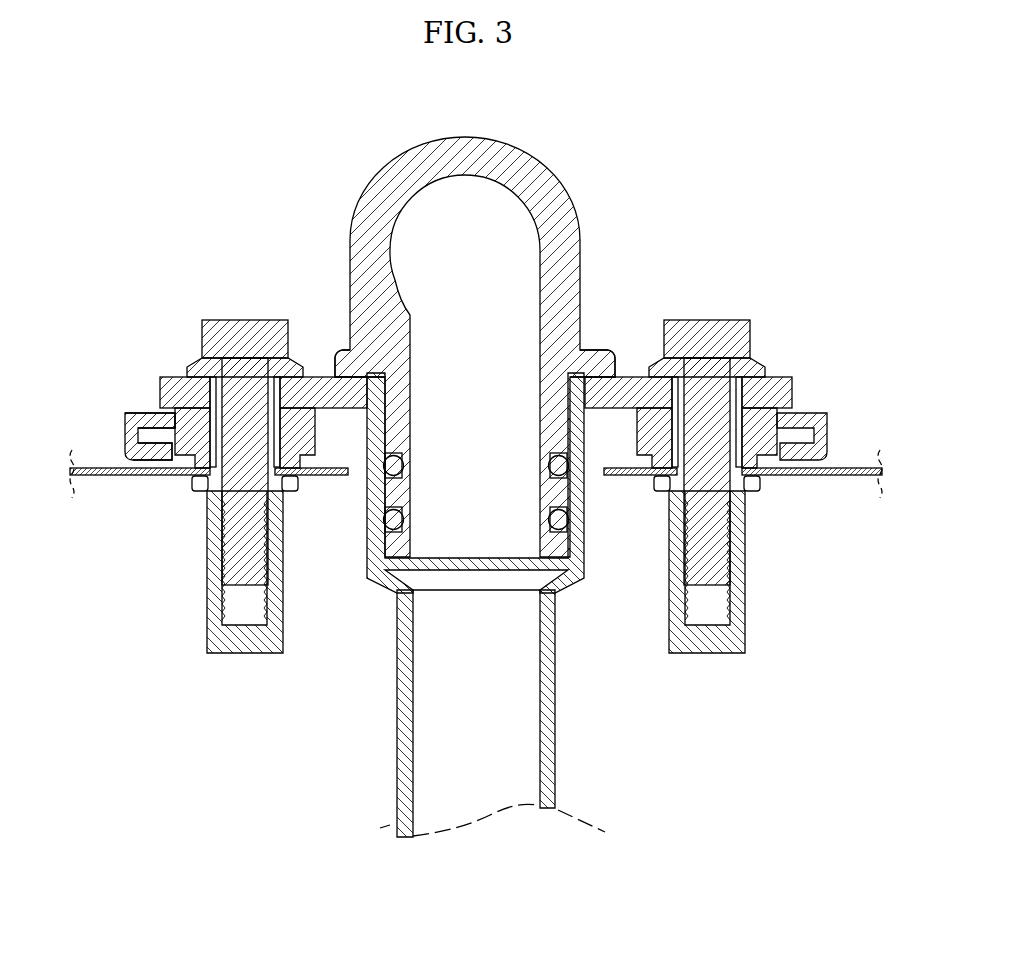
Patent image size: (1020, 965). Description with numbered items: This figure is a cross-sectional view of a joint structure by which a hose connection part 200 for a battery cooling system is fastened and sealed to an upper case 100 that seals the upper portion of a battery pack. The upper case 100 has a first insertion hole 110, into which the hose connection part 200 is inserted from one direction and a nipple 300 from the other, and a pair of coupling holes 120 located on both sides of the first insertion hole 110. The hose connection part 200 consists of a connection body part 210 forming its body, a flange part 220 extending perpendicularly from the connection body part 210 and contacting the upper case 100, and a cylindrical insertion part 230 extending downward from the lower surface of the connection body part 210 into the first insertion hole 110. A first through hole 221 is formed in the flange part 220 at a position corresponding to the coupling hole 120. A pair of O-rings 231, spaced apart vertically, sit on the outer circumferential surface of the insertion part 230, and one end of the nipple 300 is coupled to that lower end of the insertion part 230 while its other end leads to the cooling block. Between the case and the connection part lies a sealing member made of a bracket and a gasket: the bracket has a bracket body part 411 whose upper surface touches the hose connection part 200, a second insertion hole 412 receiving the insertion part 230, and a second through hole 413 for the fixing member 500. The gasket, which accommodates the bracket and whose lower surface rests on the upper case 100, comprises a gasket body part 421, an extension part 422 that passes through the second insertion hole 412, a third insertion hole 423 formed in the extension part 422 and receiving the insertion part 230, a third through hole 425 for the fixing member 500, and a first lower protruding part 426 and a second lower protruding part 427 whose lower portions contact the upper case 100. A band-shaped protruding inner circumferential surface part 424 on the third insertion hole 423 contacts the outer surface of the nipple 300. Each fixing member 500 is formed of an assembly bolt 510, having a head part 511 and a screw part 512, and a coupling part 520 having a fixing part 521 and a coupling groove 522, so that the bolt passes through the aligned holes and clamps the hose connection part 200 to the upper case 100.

The upper case 100 is at (485, 465).
The first insertion hole 110 is at (603, 476).
The coupling hole 120 is at (818, 413).
The hose connection part 200 is at (448, 334).
The connection body part 210 is at (562, 172).
The flange part 220 is at (167, 377).
The first through hole 221 is at (218, 397).
The insertion part 230 is at (368, 510).
The O-ring 231 is at (393, 468).
The nipple 300 is at (556, 740).
The bracket body part 411 is at (641, 425).
The second insertion hole 412 is at (589, 352).
The second through hole 413 is at (680, 408).
The gasket body part 421 is at (147, 447).
The extension part 422 is at (112, 443).
The third insertion hole 423 is at (365, 473).
The protruding inner circumferential surface part 424 is at (338, 351).
The third through hole 425 is at (153, 470).
The first lower protruding part 426 is at (318, 410).
The second lower protruding part 427 is at (133, 413).
The fixing member 500 is at (215, 503).
The assembly bolt 510 is at (733, 408).
The head part 511 is at (723, 352).
The screw part 512 is at (779, 377).
The coupling part 520 is at (763, 564).
The fixing part 521 is at (752, 488).
The coupling groove 522 is at (746, 613).